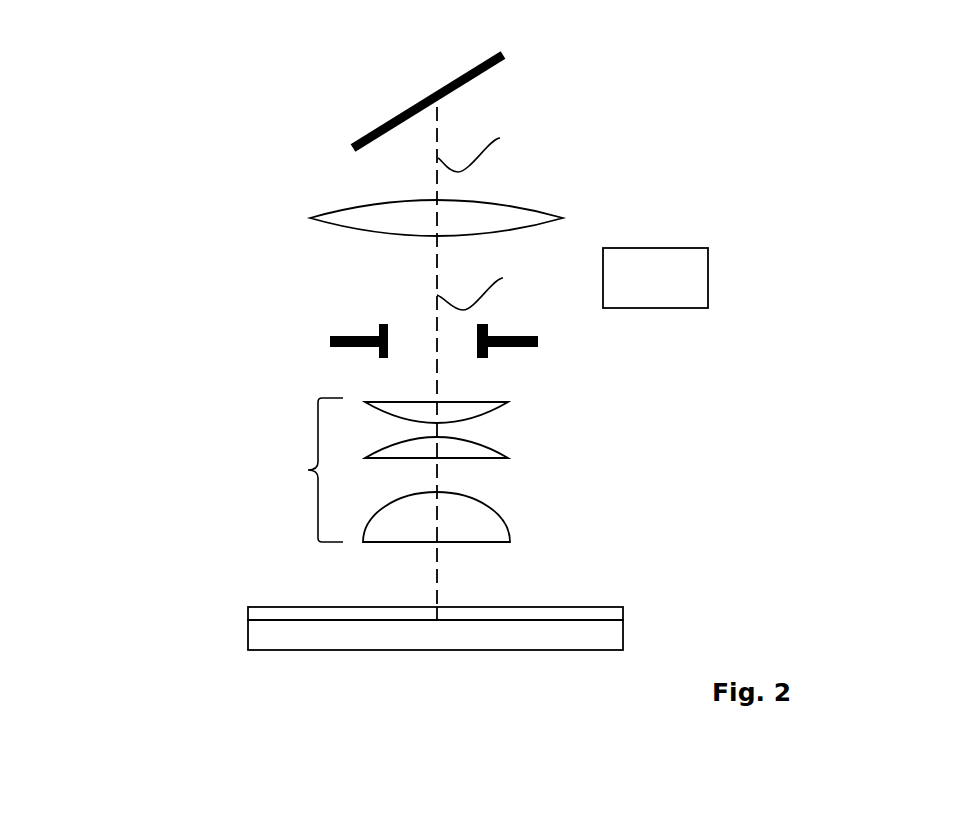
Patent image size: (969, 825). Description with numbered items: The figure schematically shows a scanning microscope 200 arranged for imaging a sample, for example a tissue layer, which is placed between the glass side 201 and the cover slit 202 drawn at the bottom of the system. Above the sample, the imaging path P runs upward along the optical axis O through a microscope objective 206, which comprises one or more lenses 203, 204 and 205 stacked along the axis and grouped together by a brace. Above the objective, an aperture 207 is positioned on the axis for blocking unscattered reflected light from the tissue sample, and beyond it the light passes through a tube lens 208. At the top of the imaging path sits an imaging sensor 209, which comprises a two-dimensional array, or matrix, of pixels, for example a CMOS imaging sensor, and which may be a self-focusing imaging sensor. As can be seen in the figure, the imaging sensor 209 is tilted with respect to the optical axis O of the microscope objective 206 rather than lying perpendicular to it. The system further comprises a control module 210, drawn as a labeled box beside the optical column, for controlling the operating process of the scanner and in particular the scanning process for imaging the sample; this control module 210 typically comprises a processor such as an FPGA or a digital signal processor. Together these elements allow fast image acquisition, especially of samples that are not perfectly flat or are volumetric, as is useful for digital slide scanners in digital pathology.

The scanning microscope 200 is at (636, 107).
The glass side 201 is at (623, 638).
The cover slit 202 is at (623, 612).
The lens 203 is at (492, 535).
The lens 204 is at (488, 452).
The lens 205 is at (490, 408).
The microscope objective 206 is at (305, 470).
The aperture 207 is at (405, 350).
The tube lens 208 is at (335, 222).
The imaging sensor 209 is at (353, 148).
The control module 210 is at (695, 300).